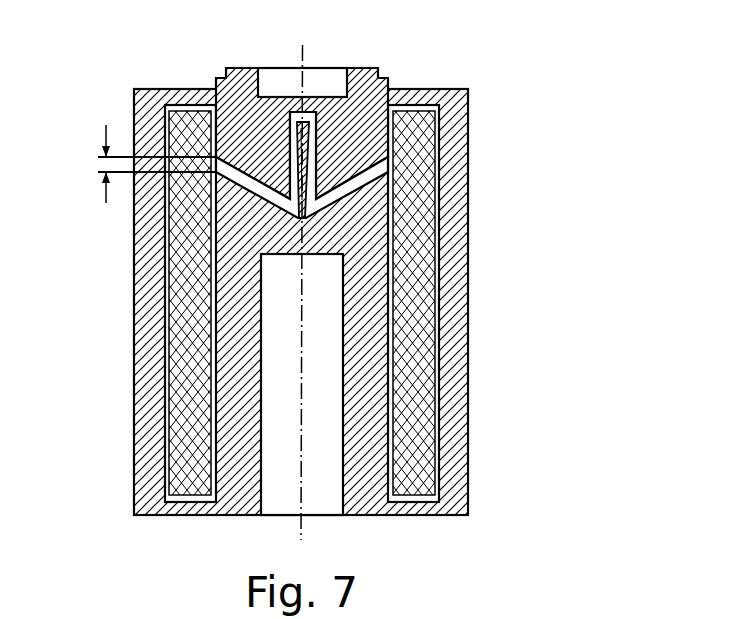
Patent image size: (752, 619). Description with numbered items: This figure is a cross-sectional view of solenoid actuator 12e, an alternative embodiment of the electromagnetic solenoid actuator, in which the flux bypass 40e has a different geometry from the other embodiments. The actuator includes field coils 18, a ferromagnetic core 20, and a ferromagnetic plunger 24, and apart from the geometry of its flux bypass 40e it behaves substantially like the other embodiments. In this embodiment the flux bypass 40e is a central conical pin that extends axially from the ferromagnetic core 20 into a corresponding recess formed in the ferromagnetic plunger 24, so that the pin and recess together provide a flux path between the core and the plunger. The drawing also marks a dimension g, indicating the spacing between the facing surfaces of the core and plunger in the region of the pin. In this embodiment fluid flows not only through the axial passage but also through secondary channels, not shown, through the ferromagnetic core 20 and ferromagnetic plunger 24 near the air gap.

The solenoid actuator 12e is at (319, 276).
The ferromagnetic plunger 24 is at (221, 83).
The ferromagnetic core 20 is at (143, 287).
The field coils 18 is at (187, 375).
The flux bypass 40e is at (305, 215).
The gap width g is at (151, 166).